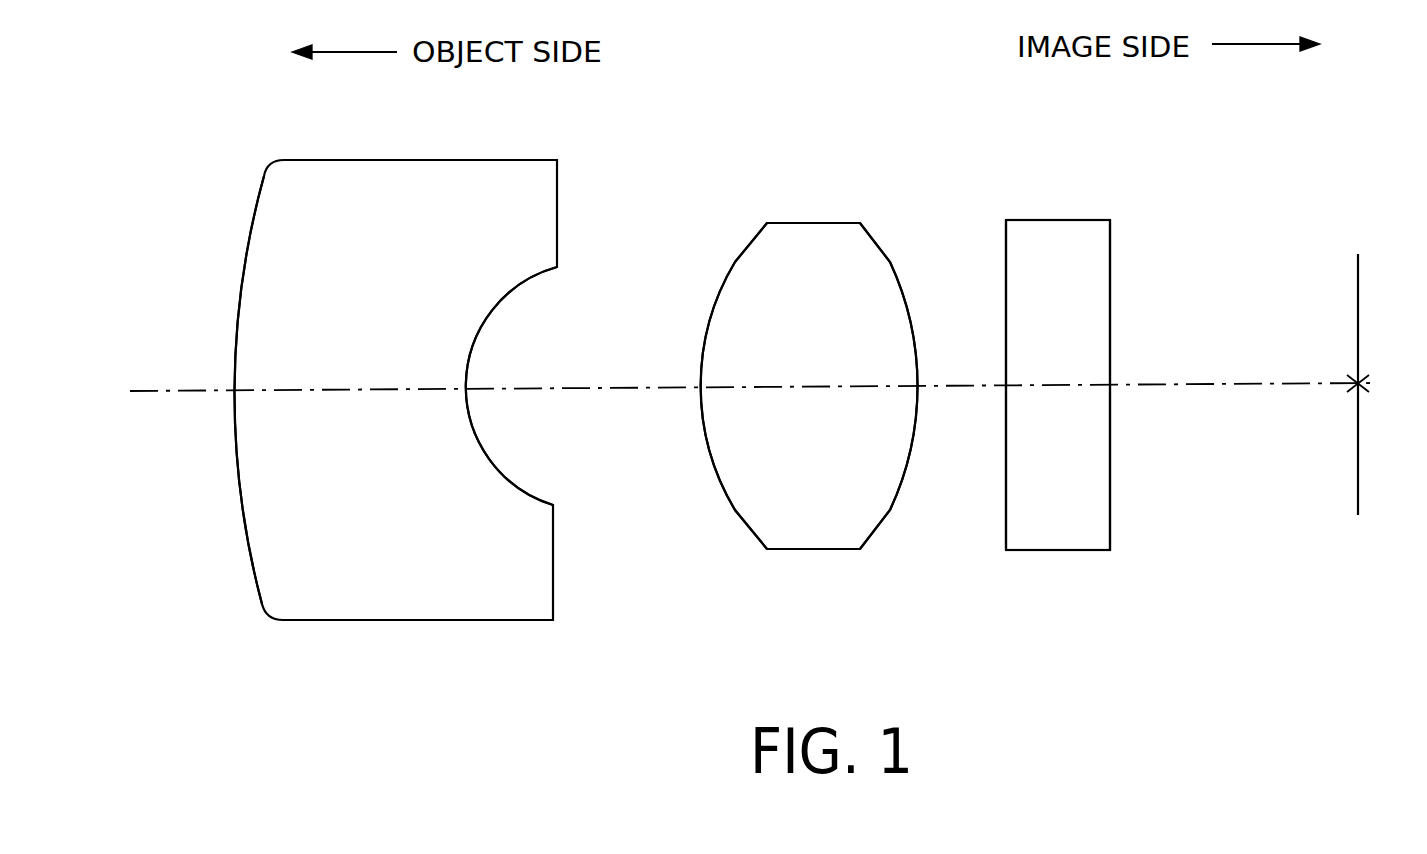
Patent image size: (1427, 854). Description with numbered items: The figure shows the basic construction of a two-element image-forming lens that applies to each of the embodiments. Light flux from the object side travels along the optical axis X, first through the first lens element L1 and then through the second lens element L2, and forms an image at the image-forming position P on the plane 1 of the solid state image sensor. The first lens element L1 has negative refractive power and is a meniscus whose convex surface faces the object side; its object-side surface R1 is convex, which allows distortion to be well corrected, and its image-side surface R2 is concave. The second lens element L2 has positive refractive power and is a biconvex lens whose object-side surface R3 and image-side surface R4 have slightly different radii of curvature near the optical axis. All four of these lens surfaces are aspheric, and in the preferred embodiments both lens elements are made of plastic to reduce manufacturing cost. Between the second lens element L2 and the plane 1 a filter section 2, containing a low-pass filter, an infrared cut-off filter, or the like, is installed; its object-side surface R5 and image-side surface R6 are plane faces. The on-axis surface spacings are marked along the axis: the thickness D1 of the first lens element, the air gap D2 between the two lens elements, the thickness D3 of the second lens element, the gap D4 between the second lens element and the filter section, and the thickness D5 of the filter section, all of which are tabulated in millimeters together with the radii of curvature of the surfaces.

The first lens element L1 is at (466, 184).
The second lens element L2 is at (810, 233).
The object-side surface of the first lens element R1 is at (240, 272).
The image-side surface of the first lens element R2 is at (500, 307).
The object-side surface of the second lens element R3 is at (729, 265).
The image-side surface of the second lens element R4 is at (890, 265).
The object-side surface of the filter section R5 is at (1005, 262).
The image-side surface of the filter section R6 is at (1112, 262).
The on-axis thickness of the first lens element D1 is at (350, 390).
The on-axis spacing between the first and second lens elements D2 is at (653, 388).
The on-axis thickness of the second lens element D3 is at (817, 388).
The on-axis spacing between the second lens element and the filter section D4 is at (943, 388).
The on-axis thickness of the filter section D5 is at (1056, 385).
The optical axis X is at (198, 392).
The plane of the solid state image sensor 1 is at (1357, 265).
The filter section 2 is at (1067, 231).
The image-forming position P is at (1366, 384).